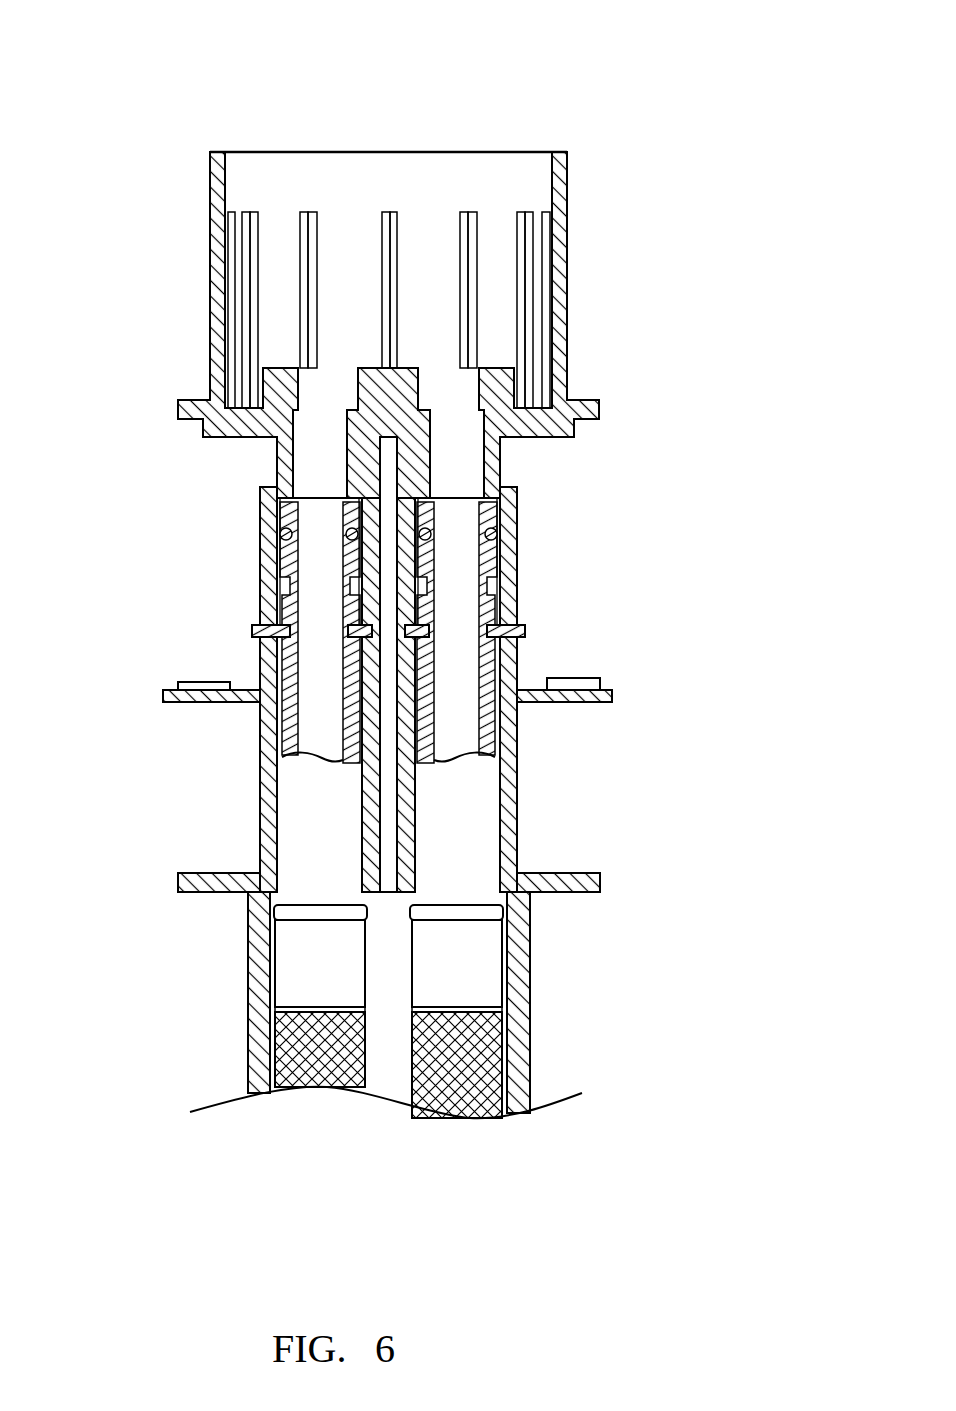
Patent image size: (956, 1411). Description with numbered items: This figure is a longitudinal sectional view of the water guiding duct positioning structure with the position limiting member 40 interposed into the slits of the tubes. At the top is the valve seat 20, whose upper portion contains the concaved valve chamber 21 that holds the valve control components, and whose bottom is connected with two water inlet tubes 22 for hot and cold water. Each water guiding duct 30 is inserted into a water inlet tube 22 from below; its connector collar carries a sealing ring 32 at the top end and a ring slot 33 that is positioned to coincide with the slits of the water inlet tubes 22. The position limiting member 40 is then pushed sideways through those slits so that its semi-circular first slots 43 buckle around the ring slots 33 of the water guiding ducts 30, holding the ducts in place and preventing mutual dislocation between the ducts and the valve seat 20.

The valve seat 20 is at (238, 945).
The valve chamber 21 is at (427, 183).
The water inlet tubes 22 is at (510, 800).
The water guiding duct 30 is at (515, 975).
The sealing ring 32 is at (260, 507).
The ring slot 33 is at (500, 580).
The position limiting member 40 is at (240, 627).
The first slot 43 is at (527, 632).